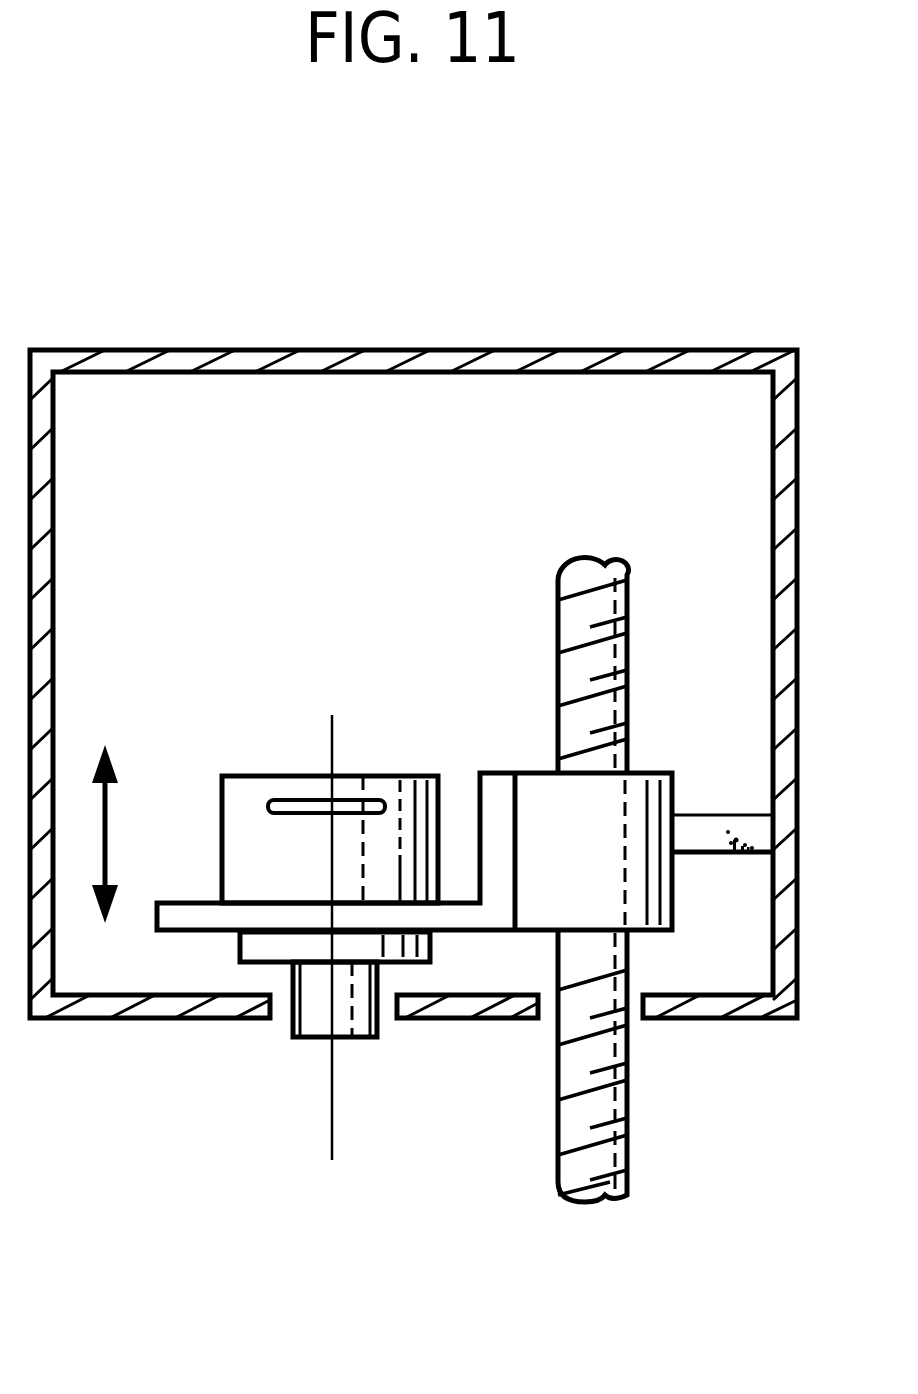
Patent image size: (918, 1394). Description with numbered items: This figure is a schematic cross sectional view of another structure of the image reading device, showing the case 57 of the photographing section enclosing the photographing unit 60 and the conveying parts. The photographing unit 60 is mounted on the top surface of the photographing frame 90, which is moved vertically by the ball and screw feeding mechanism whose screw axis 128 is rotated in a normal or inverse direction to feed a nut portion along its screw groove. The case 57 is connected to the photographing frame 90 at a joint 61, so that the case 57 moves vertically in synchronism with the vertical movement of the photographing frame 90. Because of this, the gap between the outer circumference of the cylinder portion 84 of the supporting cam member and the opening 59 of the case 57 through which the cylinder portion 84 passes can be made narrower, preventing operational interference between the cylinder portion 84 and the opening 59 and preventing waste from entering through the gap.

The case 57 is at (481, 352).
The opening 59 is at (397, 1007).
The photographing unit 60 is at (253, 800).
The joint 61 is at (707, 837).
The cylinder portion 84 is at (308, 1037).
The photographing frame 90 is at (537, 810).
The screw axis 128 is at (558, 650).